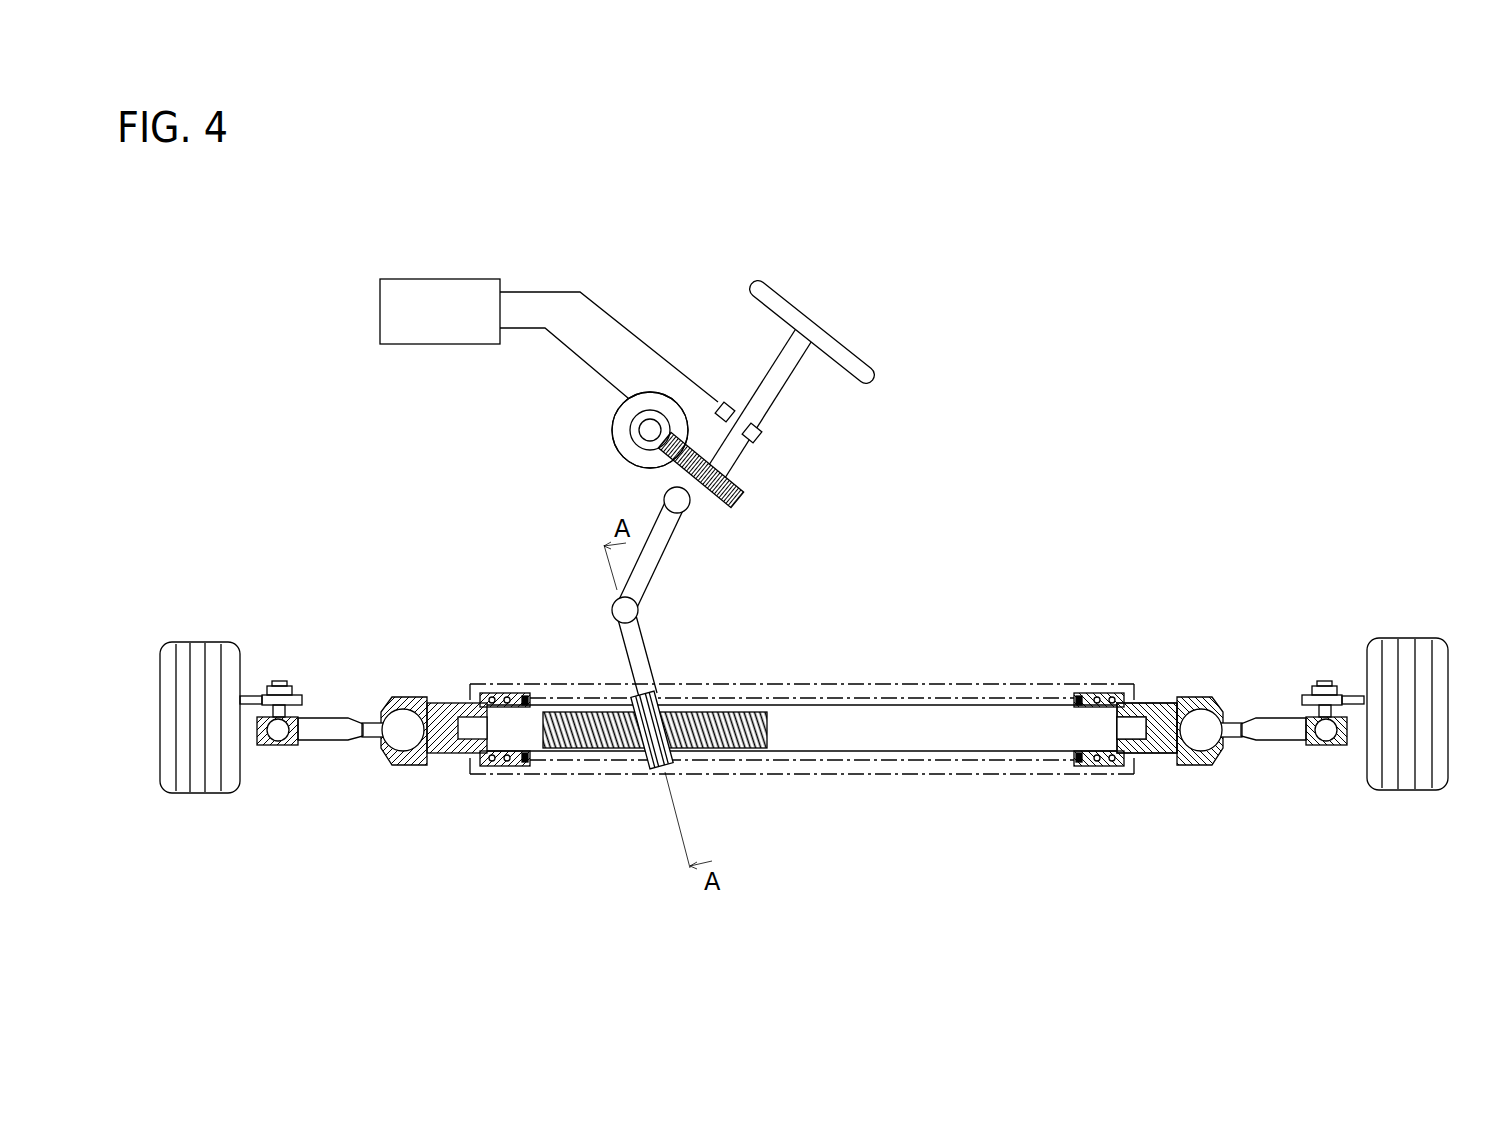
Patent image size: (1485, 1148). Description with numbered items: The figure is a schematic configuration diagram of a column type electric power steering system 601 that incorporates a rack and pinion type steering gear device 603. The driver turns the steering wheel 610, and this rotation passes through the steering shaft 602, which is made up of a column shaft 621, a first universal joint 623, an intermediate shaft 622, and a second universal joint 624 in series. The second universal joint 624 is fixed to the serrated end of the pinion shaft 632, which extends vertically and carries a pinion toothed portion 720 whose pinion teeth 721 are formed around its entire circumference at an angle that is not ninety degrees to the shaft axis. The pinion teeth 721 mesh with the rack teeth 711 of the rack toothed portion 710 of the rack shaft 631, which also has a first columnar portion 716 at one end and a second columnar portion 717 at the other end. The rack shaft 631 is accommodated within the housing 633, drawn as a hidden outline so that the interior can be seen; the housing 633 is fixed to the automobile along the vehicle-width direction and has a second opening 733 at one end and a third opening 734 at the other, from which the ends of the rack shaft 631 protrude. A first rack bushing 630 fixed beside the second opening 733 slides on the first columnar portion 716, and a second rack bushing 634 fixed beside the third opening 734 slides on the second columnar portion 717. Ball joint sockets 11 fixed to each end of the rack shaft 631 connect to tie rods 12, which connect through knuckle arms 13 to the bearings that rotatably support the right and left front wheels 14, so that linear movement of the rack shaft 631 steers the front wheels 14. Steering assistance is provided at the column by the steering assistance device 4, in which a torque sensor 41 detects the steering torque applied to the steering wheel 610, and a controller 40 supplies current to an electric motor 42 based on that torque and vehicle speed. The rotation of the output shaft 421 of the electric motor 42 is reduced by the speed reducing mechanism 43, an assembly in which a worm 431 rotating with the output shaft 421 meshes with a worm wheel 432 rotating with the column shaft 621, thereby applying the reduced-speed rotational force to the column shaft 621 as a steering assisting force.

The steering assistance device 4 is at (605, 397).
The controller 40 is at (411, 279).
The torque sensor 41 is at (763, 435).
The electric motor 42 is at (620, 430).
The output shaft 421 is at (648, 431).
The speed reducing mechanism 43 is at (629, 450).
The worm 431 is at (636, 438).
The worm wheel 432 is at (672, 467).
The column type electric power steering system 601 is at (957, 375).
The steering shaft 602 is at (768, 451).
The steering gear device 603 is at (1005, 663).
The steering wheel 610 is at (855, 362).
The column shaft 621 is at (723, 458).
The intermediate shaft 622 is at (660, 553).
The first universal joint 623 is at (682, 505).
The second universal joint 624 is at (611, 610).
The first rack bushing 630 is at (497, 692).
The rack shaft 631 is at (921, 705).
The pinion shaft 632 is at (641, 630).
The housing 633 is at (1008, 774).
The second rack bushing 634 is at (1121, 692).
The rack toothed portion 710 is at (802, 764).
The rack teeth 711 is at (706, 752).
The first columnar portion 716 is at (543, 742).
The second columnar portion 717 is at (1076, 746).
The pinion toothed portion 720 is at (682, 729).
The pinion teeth 721 is at (659, 770).
The second opening 733 is at (472, 760).
The third opening 734 is at (1138, 763).
The ball joint socket 11 is at (392, 698).
The tie rod 12 is at (336, 741).
The knuckle arm 13 is at (250, 692).
The front wheel 14 is at (200, 642).